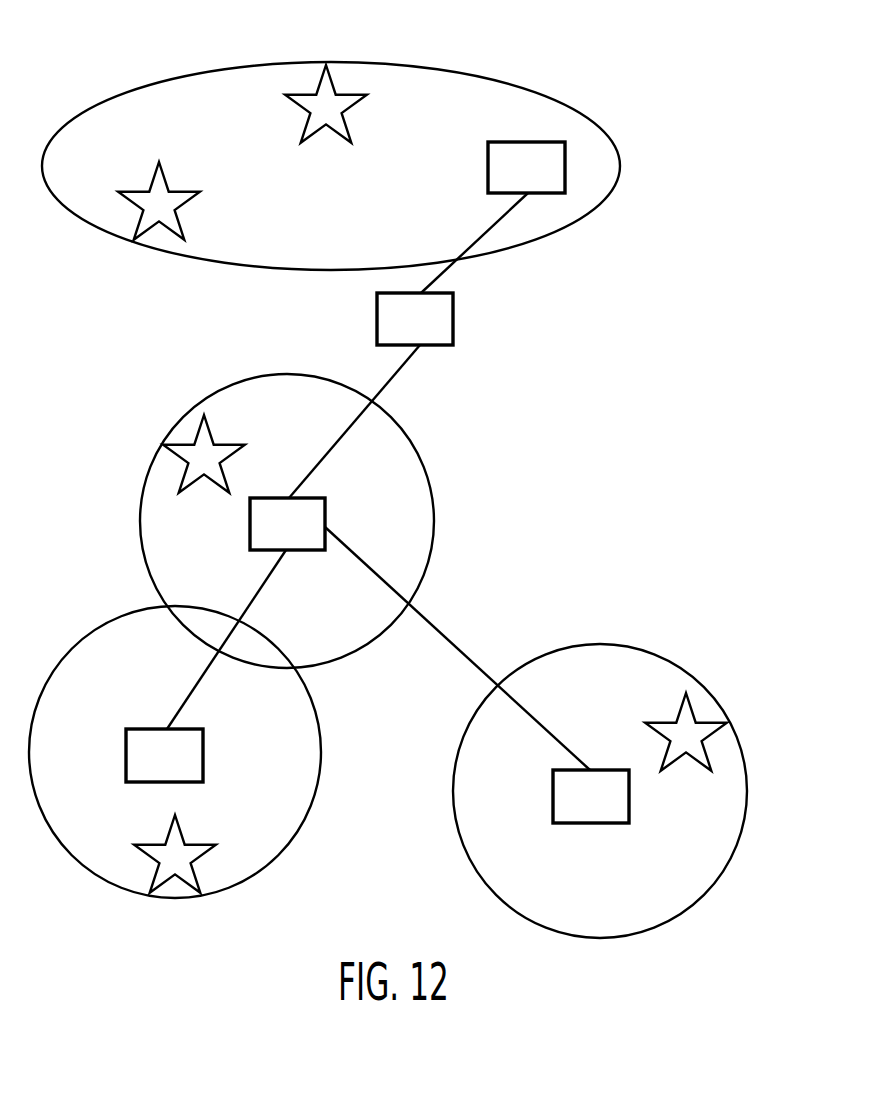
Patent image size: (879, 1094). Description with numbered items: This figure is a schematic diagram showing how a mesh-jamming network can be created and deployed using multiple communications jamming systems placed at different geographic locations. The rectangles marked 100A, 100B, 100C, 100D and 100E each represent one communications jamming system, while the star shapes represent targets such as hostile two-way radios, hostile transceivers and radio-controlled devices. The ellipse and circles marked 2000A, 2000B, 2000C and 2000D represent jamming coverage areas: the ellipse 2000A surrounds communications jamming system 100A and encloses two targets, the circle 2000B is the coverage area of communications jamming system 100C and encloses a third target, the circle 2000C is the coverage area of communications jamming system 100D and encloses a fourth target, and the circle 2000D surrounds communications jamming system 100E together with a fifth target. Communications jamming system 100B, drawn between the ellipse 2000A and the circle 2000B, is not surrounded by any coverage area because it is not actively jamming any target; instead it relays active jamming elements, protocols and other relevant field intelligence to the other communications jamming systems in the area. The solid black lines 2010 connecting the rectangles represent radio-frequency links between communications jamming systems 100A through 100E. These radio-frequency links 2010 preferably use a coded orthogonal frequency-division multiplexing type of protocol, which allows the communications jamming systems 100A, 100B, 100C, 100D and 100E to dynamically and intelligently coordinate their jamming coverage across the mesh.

The jamming coverage area 2000A is at (512, 86).
The jamming coverage area 2000B is at (432, 543).
The jamming coverage area 2000C is at (270, 862).
The jamming coverage area 2000D is at (643, 649).
The radio-frequency links 2010 is at (480, 236).
The communications jamming system 100A is at (565, 155).
The communications jamming system 100B is at (453, 322).
The communications jamming system 100C is at (325, 512).
The communications jamming system 100D is at (203, 752).
The communications jamming system 100E is at (553, 806).